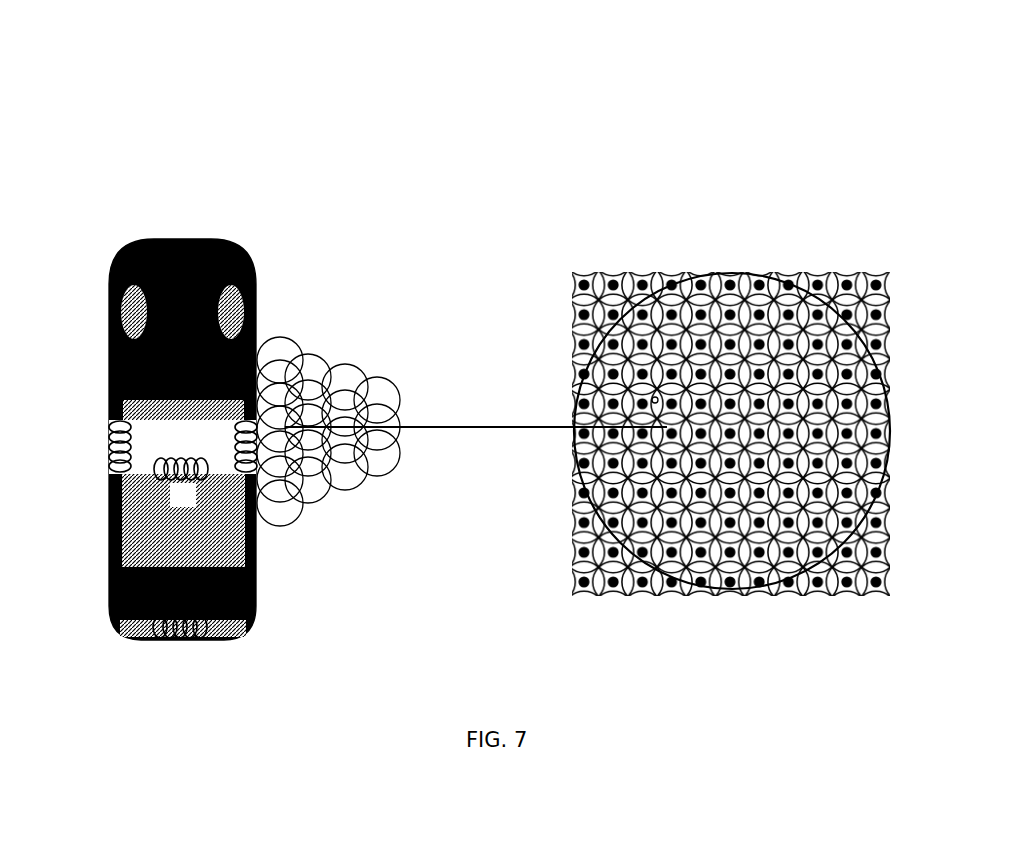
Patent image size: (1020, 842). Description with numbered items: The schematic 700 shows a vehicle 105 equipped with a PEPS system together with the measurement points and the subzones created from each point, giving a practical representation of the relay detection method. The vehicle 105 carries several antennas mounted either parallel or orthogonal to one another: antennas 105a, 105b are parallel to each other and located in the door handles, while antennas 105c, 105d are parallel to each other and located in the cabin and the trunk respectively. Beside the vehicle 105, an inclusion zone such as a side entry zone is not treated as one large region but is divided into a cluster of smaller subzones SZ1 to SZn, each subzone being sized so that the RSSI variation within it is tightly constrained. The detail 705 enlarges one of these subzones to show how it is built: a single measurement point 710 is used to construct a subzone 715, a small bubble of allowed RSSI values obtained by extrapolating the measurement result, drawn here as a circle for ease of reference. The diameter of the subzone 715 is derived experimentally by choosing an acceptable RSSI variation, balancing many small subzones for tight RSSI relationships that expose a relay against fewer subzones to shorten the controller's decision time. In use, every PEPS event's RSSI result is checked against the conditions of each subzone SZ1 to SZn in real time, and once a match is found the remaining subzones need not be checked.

The schematic 700 is at (800, 160).
The vehicle 105 is at (114, 262).
The antenna 105a is at (108, 428).
The antenna 105b is at (243, 472).
The antenna 105c is at (157, 478).
The antenna 105d is at (153, 633).
The subzone SZ1 is at (274, 357).
The subzone SZn is at (380, 473).
The detail 705 is at (672, 273).
The measurement point 710 is at (670, 403).
The subzone 715 is at (650, 398).